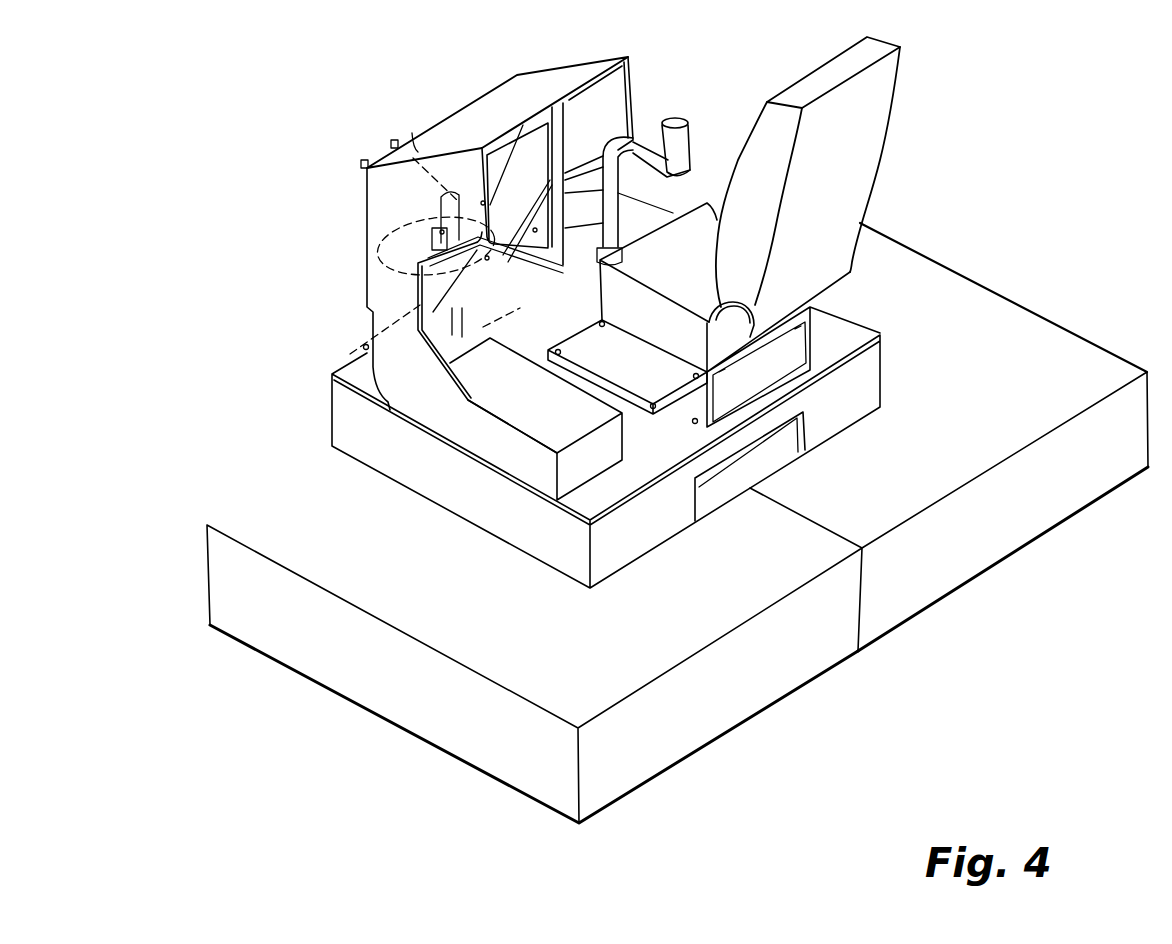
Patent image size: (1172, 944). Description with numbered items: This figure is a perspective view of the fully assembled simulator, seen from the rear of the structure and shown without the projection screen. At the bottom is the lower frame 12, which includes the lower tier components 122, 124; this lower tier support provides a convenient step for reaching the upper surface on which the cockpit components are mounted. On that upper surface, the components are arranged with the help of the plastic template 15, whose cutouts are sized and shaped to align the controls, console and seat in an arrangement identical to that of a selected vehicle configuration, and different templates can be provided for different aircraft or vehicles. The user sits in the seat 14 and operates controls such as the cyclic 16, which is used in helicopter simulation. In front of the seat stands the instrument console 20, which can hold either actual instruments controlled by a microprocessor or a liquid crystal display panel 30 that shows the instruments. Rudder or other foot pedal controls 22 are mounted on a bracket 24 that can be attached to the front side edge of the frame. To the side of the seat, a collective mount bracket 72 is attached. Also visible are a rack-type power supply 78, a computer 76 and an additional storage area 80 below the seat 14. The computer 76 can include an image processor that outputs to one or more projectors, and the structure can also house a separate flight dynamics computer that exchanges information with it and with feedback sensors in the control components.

The lower frame 12 is at (677, 523).
The seat 14 is at (878, 108).
The plastic template 15 is at (852, 330).
The cyclic 16 is at (677, 120).
The instrument console 20 is at (528, 94).
The foot pedal controls 22 is at (412, 132).
The bracket 24 is at (377, 229).
The liquid crystal display panel 30 is at (533, 152).
The collective mount bracket 72 is at (646, 378).
The computer 76 is at (717, 490).
The rack-type power supply 78 is at (762, 450).
The additional storage area 80 is at (783, 355).
The lower tier component 122 is at (735, 712).
The lower tier component 124 is at (1015, 530).